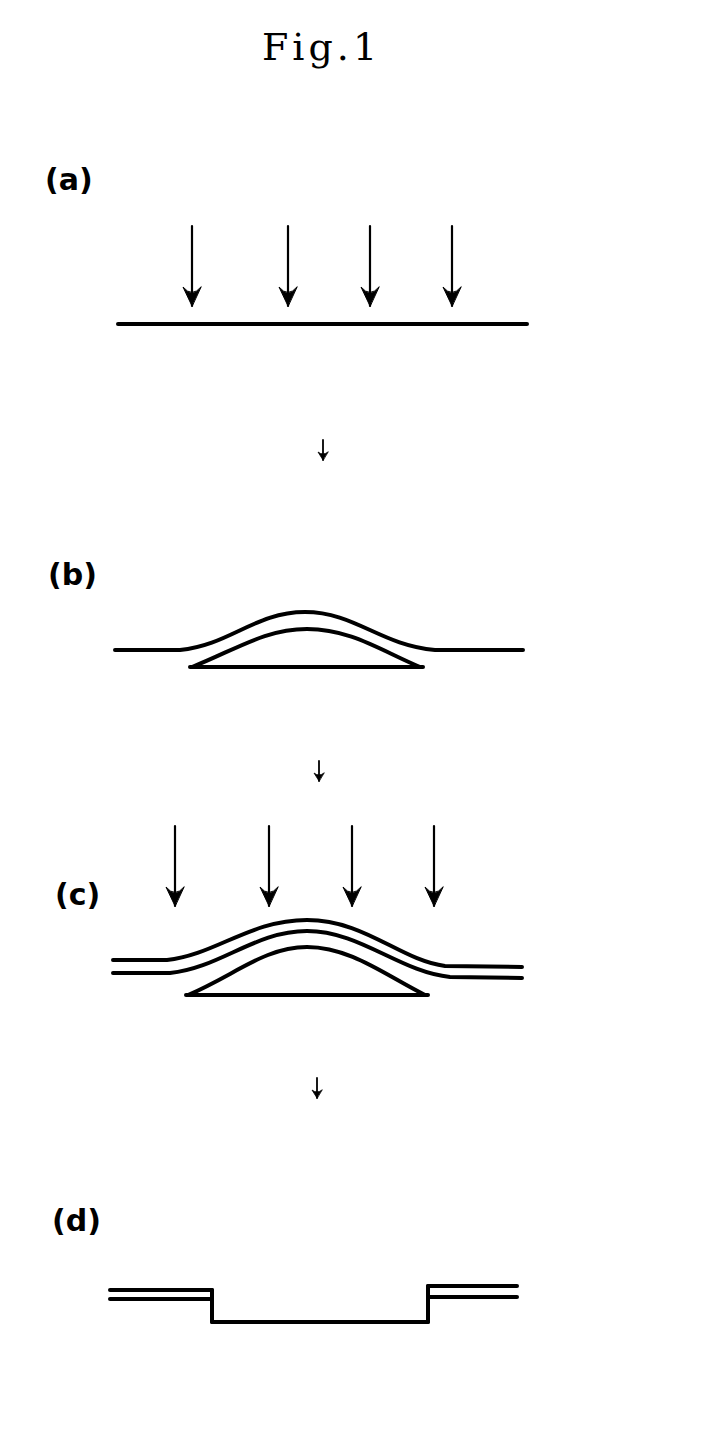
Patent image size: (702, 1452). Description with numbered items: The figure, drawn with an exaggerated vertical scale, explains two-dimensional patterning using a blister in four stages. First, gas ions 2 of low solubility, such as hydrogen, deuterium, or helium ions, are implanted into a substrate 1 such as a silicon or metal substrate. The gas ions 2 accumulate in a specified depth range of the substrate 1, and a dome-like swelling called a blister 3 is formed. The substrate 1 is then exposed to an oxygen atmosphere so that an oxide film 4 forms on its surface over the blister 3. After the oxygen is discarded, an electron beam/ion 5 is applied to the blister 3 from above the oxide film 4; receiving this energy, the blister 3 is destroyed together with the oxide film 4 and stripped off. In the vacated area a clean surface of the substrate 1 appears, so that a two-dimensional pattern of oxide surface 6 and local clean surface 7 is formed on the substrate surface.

The substrate 1 is at (515, 352).
The gas ions 2 is at (477, 264).
The blister 3 is at (368, 621).
The oxide film 4 is at (230, 950).
The electron beam/ion 5 is at (453, 859).
The oxide surface 6 is at (477, 1286).
The local clean surface 7 is at (330, 1322).